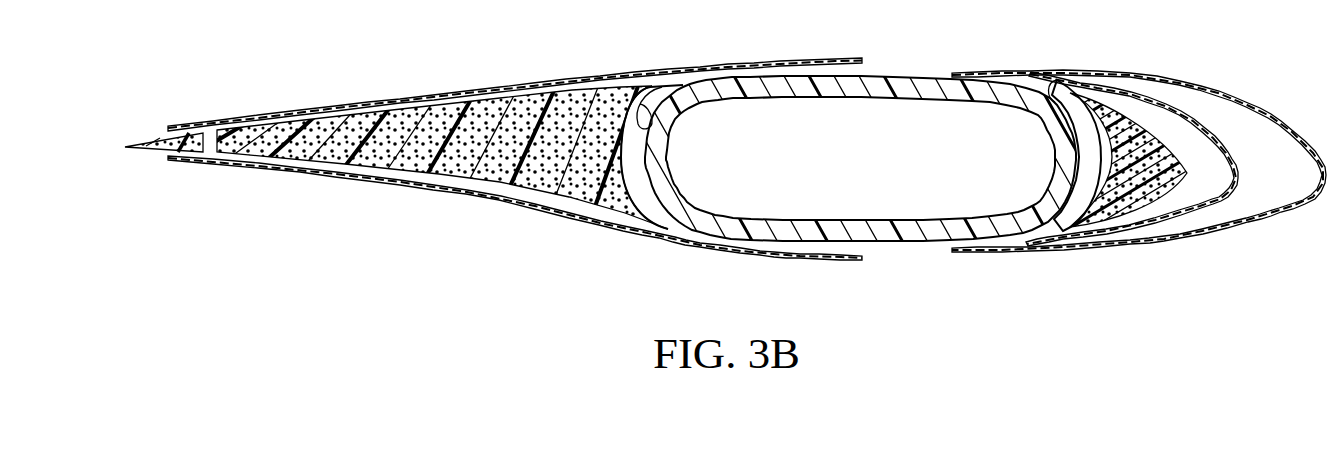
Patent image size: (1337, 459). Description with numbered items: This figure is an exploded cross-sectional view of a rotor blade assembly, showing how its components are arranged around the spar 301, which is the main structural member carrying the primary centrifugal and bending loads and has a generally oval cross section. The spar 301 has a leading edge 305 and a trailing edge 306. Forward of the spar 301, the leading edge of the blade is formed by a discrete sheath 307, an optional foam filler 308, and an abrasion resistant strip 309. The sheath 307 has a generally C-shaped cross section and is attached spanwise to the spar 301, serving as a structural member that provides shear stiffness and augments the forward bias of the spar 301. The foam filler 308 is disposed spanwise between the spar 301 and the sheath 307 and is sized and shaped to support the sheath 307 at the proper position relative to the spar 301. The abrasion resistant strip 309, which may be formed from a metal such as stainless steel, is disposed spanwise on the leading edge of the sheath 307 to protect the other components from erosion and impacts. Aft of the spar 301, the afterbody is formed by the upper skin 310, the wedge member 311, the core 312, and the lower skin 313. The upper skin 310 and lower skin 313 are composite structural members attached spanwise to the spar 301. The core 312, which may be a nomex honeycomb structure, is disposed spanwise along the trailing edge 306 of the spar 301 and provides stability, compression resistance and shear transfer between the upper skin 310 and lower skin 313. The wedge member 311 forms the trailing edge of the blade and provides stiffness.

The spar 301 is at (908, 240).
The leading edge 305 is at (1056, 80).
The trailing edge 306 is at (648, 97).
The sheath 307 is at (1135, 230).
The foam filler 308 is at (1090, 238).
The abrasion resistant strip 309 is at (1227, 234).
The upper skin 310 is at (558, 80).
The wedge member 311 is at (150, 141).
The core 312 is at (397, 176).
The lower skin 313 is at (497, 206).